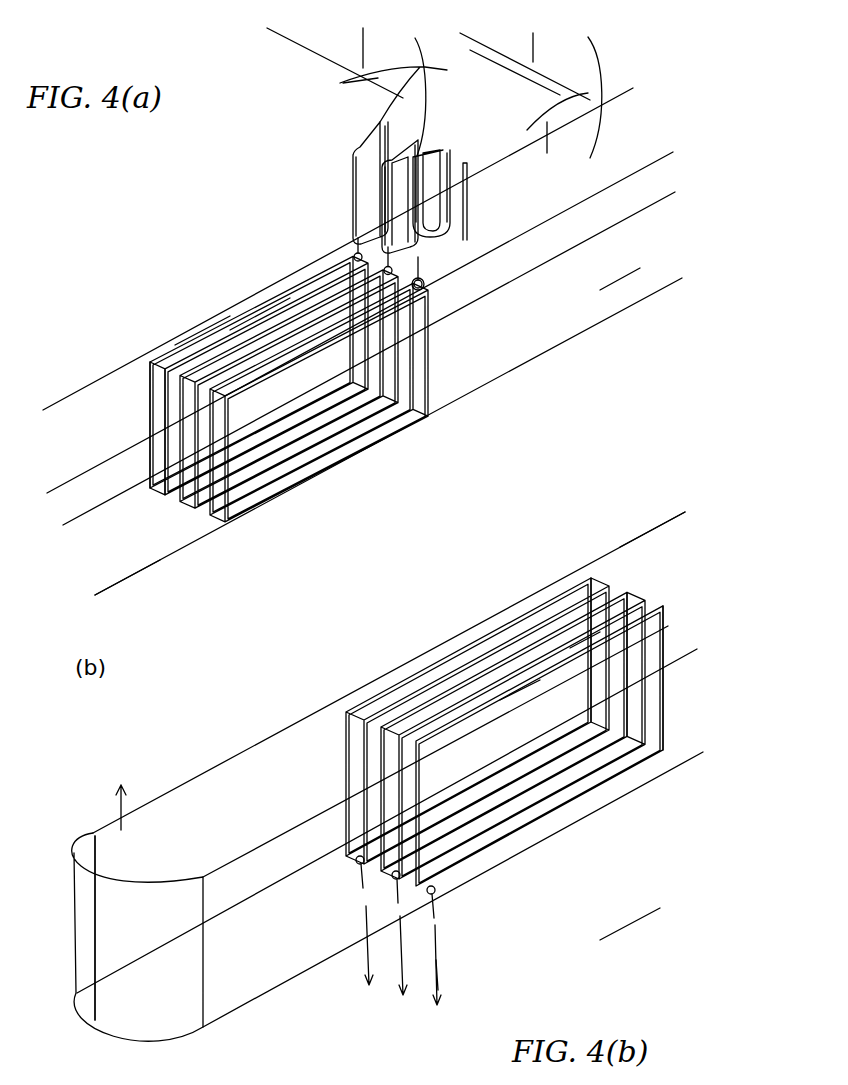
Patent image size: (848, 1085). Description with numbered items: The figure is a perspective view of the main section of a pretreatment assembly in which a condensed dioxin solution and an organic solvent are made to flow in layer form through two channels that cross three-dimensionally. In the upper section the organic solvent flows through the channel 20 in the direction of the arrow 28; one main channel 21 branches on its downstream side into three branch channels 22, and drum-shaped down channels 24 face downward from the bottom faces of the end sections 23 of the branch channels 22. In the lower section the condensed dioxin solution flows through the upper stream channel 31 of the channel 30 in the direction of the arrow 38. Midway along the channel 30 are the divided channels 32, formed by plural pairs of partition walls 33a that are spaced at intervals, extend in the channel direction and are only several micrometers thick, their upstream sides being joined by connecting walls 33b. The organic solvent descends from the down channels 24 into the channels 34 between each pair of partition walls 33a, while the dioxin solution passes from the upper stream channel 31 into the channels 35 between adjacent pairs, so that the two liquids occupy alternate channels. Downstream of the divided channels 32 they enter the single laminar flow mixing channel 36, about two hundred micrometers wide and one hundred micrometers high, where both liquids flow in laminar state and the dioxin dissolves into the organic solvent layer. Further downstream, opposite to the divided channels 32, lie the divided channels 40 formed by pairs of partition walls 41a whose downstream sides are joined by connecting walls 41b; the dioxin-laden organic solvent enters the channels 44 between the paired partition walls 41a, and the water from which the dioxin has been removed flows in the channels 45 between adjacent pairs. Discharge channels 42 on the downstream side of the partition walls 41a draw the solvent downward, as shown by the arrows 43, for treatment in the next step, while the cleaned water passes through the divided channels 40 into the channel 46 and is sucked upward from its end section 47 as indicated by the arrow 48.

In FIG. 4A, the channel 20 is at (631, 51).
In FIG. 4A, the main channel 21 is at (350, 83).
In FIG. 4A, the branch channels 22 is at (366, 150).
In FIG. 4A, the end sections 23 is at (350, 186).
In FIG. 4A, the down channels 24 is at (425, 268).
In FIG. 4A, the arrow 28 is at (469, 113).
In FIG. 4A, the channel 30 is at (598, 409).
In FIG. 4B, the channel 30 is at (603, 944).
In FIG. 4A, the upper stream channel 31 is at (577, 320).
In FIG. 4A, the divided channels 32 is at (296, 277).
In FIG. 4A, the partition walls 33a is at (150, 372).
In FIG. 4A, the connecting walls 33b is at (356, 252).
In FIG. 4A, the channels 34 is at (260, 330).
In FIG. 4A, the channels 35 is at (178, 345).
In FIG. 4A, the laminar flow mixing channel 36 is at (127, 553).
In FIG. 4B, the laminar flow mixing channel 36 is at (655, 553).
In FIG. 4A, the arrow 38 is at (597, 287).
In FIG. 4B, the divided channels 40 is at (390, 680).
In FIG. 4B, the partition walls 41a is at (610, 592).
In FIG. 4B, the connecting walls 41b is at (352, 738).
In FIG. 4B, the discharge channels 42 is at (438, 908).
In FIG. 4B, the arrows 43 is at (440, 975).
In FIG. 4B, the channels 44 is at (510, 703).
In FIG. 4B, the channels 45 is at (580, 643).
In FIG. 4B, the channel 46 is at (258, 773).
In FIG. 4B, the end section 47 is at (158, 838).
In FIG. 4B, the arrow 48 is at (122, 805).